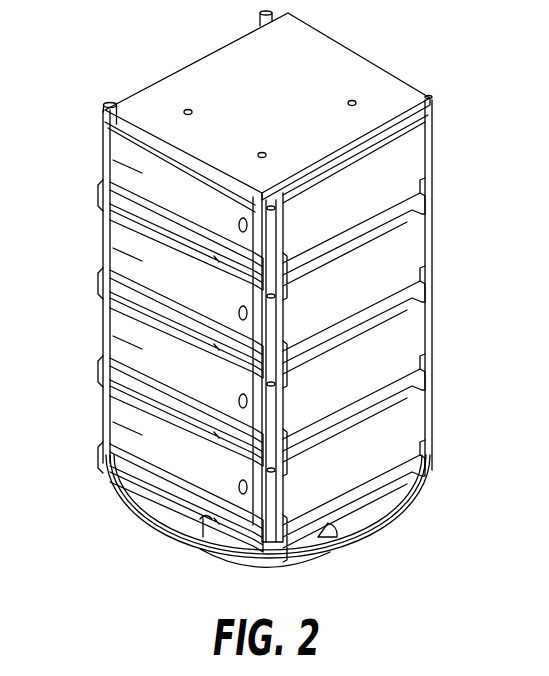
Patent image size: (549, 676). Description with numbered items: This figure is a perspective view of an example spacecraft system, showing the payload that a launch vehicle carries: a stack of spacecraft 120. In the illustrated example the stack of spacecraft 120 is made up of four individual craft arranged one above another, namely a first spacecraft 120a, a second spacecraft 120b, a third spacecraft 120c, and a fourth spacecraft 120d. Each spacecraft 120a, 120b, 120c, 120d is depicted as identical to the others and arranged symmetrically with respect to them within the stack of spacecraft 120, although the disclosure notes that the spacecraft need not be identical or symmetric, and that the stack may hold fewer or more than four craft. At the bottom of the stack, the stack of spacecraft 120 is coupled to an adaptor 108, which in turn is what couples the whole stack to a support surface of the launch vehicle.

The stack of spacecraft 120 is at (229, 281).
The first spacecraft 120a is at (110, 157).
The second spacecraft 120b is at (226, 304).
The third spacecraft 120c is at (226, 392).
The fourth spacecraft 120d is at (226, 478).
The adaptor 108 is at (371, 527).